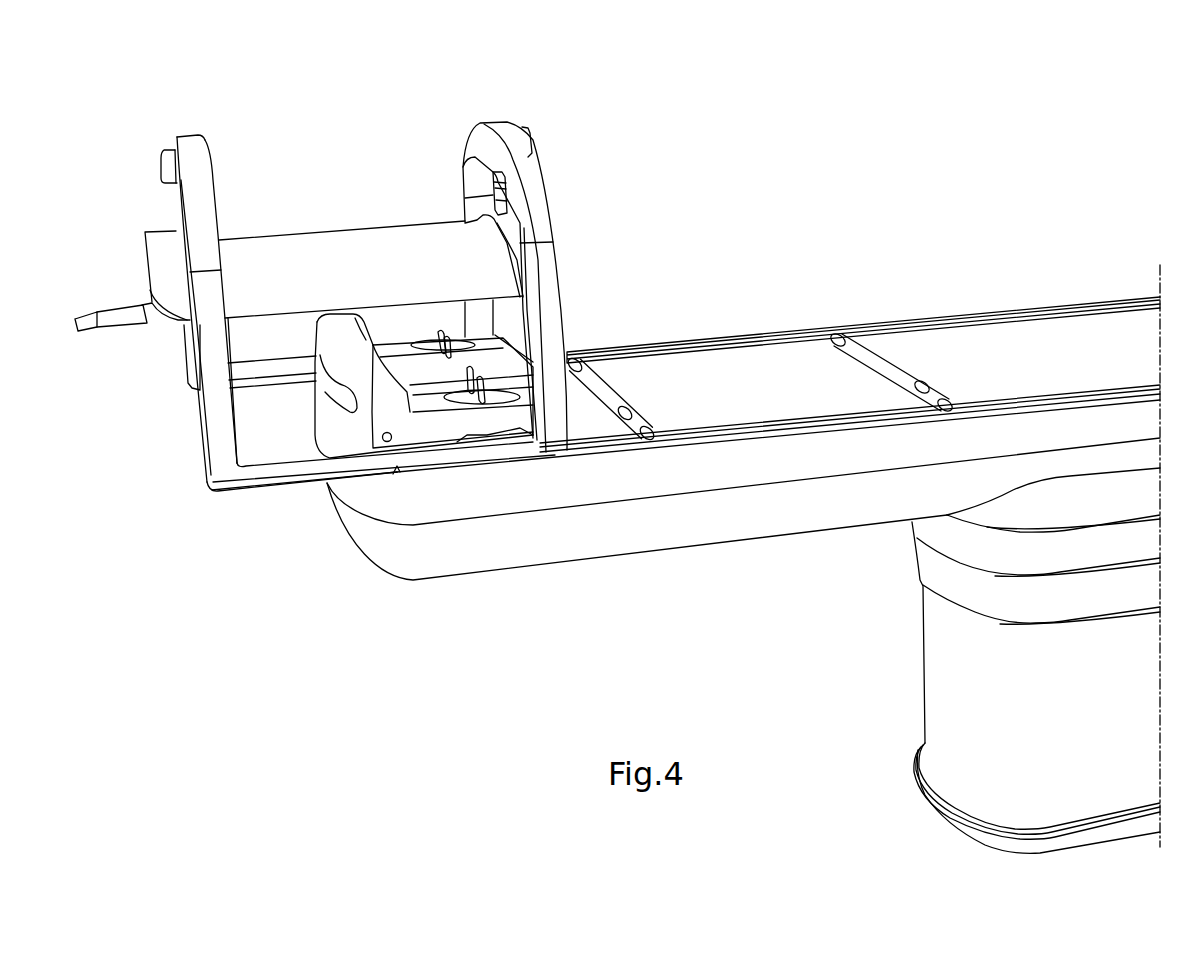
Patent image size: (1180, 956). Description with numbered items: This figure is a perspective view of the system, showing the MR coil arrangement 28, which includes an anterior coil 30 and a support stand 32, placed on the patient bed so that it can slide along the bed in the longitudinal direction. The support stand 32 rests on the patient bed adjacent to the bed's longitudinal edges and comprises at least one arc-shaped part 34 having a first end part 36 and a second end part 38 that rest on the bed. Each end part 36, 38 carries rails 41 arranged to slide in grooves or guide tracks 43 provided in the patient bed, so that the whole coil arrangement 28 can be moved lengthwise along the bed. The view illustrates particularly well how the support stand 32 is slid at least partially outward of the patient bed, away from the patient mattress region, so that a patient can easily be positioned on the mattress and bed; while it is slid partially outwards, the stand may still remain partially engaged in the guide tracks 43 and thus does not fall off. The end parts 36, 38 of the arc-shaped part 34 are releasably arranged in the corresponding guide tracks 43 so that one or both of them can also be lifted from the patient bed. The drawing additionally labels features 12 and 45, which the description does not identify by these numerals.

The patient table 12 is at (942, 682).
The MR coil arrangement 28 is at (348, 135).
The anterior coil 30 is at (282, 247).
The support stand 32 is at (551, 267).
The arc-shaped part 34 is at (185, 142).
The first end part 36 is at (280, 368).
The second end part 38 is at (263, 477).
The rail 41 is at (280, 483).
The guide track 43 is at (672, 342).
The notch 45 is at (397, 473).